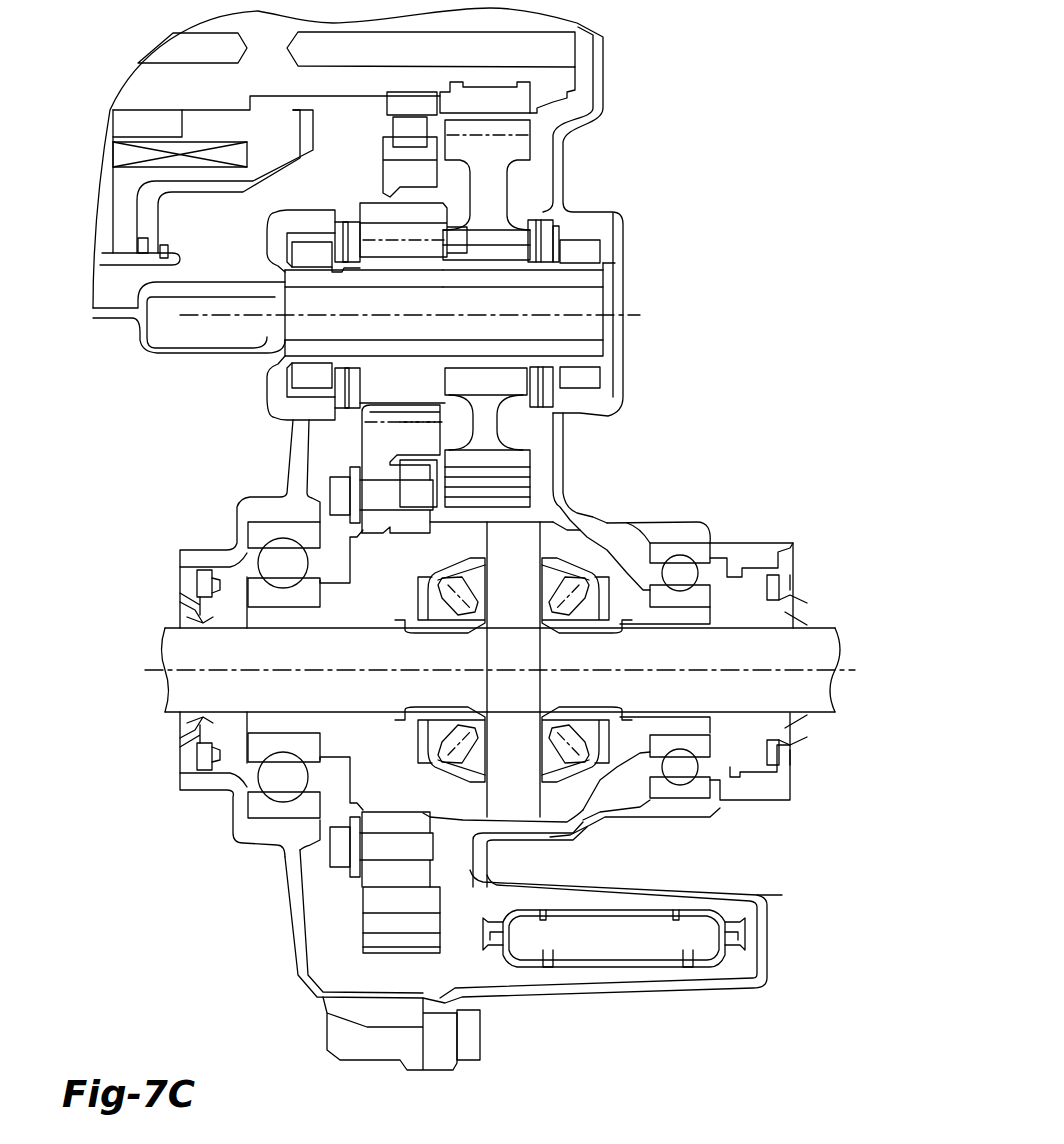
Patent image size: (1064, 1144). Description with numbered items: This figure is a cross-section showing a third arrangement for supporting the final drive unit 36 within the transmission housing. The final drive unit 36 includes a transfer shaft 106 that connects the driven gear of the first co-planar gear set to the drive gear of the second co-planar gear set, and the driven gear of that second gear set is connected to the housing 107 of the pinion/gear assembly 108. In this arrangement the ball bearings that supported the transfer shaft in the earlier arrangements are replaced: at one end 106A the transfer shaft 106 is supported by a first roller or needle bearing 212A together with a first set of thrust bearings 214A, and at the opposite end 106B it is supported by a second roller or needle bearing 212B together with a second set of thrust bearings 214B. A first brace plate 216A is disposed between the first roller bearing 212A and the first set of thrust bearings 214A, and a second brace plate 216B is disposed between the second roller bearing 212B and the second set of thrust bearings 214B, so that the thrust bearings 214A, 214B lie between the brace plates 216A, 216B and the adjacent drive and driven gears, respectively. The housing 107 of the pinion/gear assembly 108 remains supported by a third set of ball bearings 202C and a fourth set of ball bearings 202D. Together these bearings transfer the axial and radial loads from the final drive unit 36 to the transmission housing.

The final drive unit 36 is at (648, 46).
The transfer shaft 106 is at (588, 277).
The one end of the transfer shaft 106A is at (323, 280).
The opposite end of the transfer shaft 106B is at (567, 280).
The housing of the pinion/gear assembly 107 is at (587, 537).
The pinion/gear assembly 108 is at (583, 817).
The third set of ball bearings 202C is at (283, 563).
The fourth set of ball bearings 202D is at (697, 552).
The first roller or needle bearing 212A is at (313, 250).
The second roller or needle bearing 212B is at (570, 257).
The first set of thrust bearings 214A is at (353, 240).
The second set of thrust bearings 214B is at (533, 216).
The first brace plate 216A is at (347, 248).
The second brace plate 216B is at (557, 230).